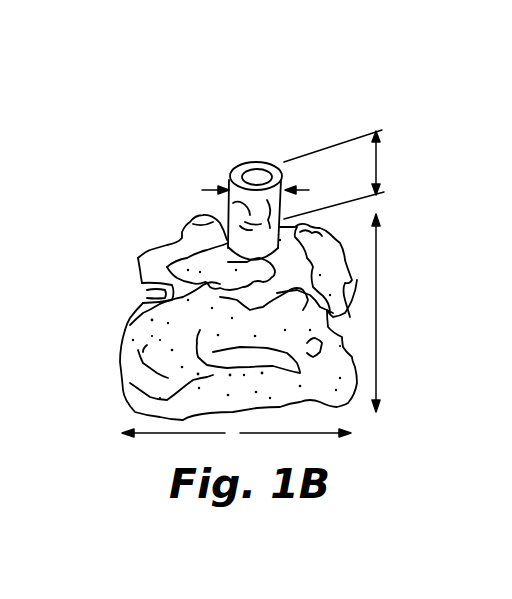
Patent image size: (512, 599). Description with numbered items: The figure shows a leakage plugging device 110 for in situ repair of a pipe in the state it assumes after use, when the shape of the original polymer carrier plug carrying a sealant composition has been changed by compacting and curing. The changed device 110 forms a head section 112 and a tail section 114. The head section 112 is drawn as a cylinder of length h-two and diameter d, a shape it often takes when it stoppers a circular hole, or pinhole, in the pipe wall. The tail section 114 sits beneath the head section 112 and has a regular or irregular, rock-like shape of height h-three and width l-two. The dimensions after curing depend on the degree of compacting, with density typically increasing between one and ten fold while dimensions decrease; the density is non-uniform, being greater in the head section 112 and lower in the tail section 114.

The leakage plugging device after use 110 is at (449, 96).
The head section 112 is at (236, 165).
The tail section 114 is at (94, 328).